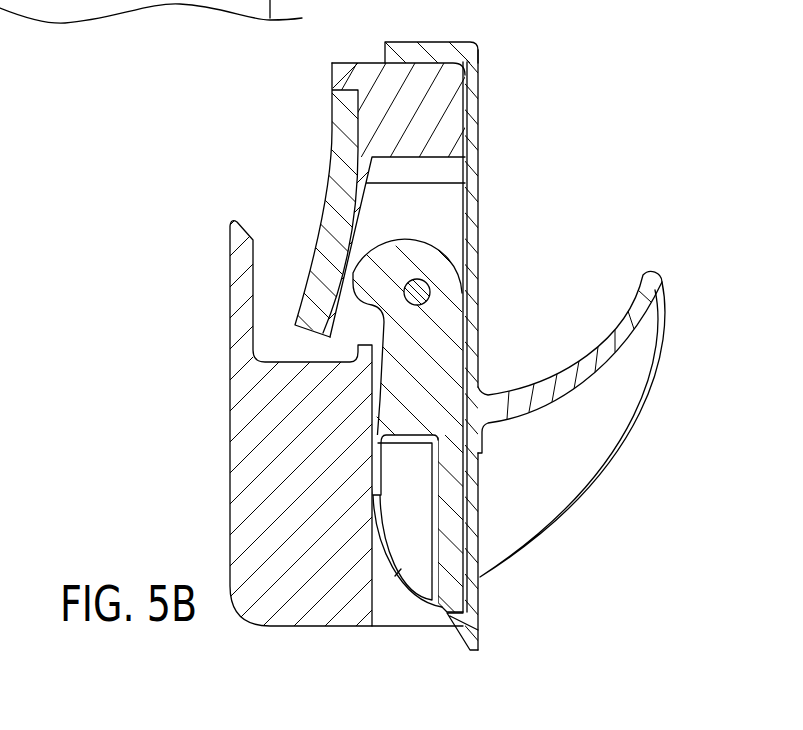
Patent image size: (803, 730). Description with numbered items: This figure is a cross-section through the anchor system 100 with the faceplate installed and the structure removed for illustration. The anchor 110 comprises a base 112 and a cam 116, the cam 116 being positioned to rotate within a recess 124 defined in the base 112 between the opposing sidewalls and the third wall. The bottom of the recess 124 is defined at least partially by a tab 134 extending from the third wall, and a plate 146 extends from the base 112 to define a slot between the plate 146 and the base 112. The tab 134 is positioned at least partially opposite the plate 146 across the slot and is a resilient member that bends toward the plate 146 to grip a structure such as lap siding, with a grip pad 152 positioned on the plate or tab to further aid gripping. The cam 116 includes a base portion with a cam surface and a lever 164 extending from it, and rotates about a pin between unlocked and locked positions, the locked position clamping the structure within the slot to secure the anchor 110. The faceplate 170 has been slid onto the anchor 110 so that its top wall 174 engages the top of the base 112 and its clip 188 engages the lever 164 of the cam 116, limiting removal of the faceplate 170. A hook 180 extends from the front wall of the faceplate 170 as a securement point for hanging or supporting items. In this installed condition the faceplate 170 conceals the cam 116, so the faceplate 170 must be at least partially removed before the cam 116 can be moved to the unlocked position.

The anchor system 100 is at (523, 88).
The anchor 110 is at (245, 403).
The base 112 is at (252, 488).
The cam 116 is at (440, 313).
The recess 124 is at (396, 618).
The tab 134 is at (363, 222).
The plate 146 is at (235, 284).
The grip pad 152 is at (336, 148).
The lever 164 is at (456, 489).
The faceplate 170 is at (472, 189).
The top wall 174 is at (415, 48).
The hook 180 is at (650, 280).
The clip 188 is at (470, 625).